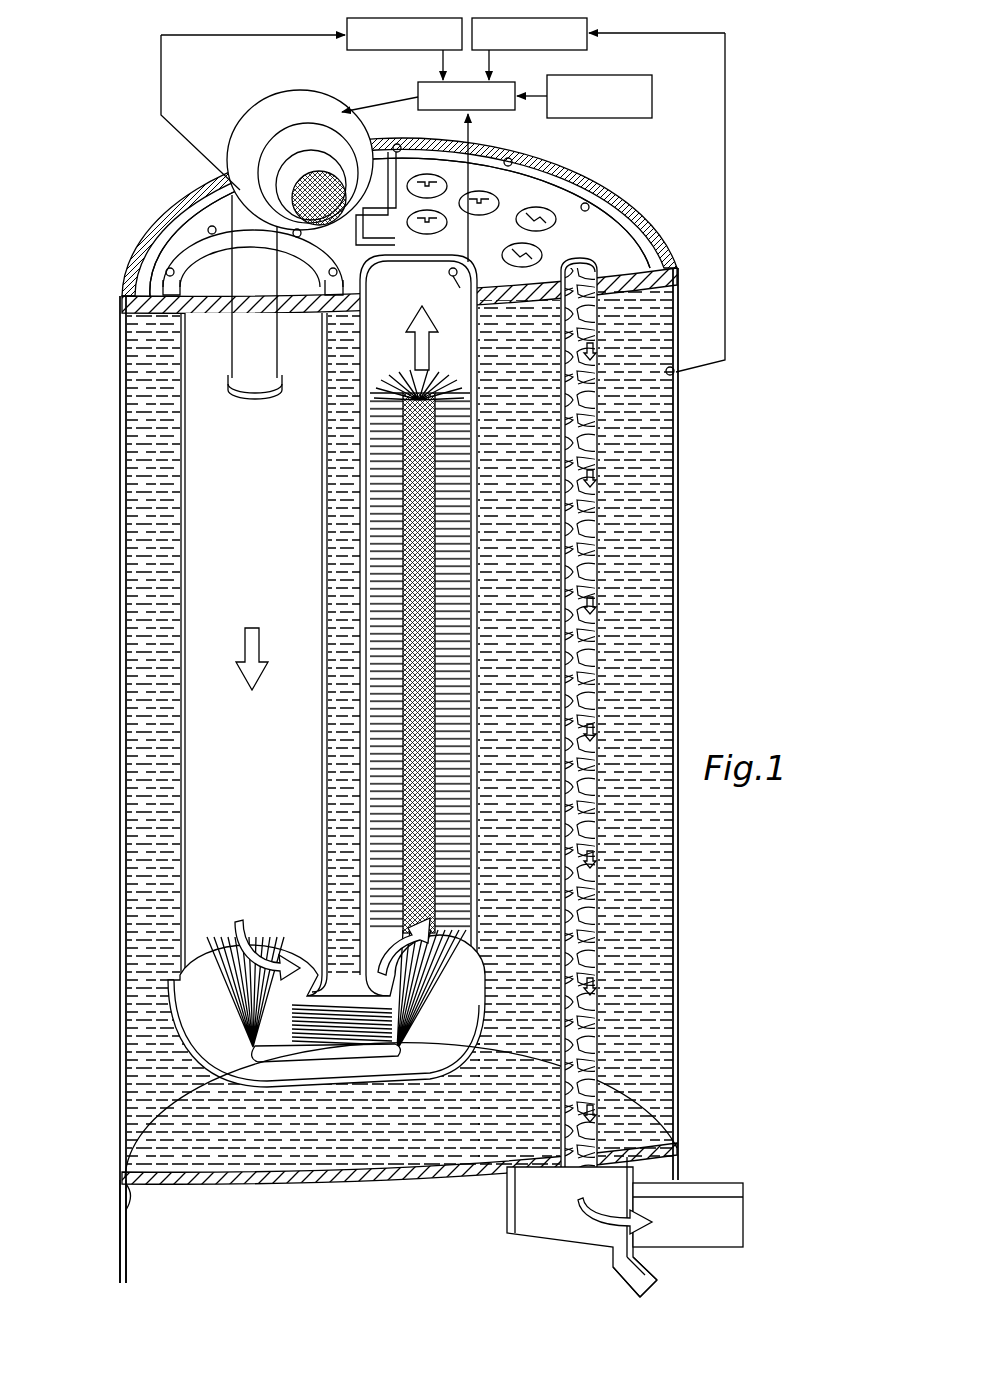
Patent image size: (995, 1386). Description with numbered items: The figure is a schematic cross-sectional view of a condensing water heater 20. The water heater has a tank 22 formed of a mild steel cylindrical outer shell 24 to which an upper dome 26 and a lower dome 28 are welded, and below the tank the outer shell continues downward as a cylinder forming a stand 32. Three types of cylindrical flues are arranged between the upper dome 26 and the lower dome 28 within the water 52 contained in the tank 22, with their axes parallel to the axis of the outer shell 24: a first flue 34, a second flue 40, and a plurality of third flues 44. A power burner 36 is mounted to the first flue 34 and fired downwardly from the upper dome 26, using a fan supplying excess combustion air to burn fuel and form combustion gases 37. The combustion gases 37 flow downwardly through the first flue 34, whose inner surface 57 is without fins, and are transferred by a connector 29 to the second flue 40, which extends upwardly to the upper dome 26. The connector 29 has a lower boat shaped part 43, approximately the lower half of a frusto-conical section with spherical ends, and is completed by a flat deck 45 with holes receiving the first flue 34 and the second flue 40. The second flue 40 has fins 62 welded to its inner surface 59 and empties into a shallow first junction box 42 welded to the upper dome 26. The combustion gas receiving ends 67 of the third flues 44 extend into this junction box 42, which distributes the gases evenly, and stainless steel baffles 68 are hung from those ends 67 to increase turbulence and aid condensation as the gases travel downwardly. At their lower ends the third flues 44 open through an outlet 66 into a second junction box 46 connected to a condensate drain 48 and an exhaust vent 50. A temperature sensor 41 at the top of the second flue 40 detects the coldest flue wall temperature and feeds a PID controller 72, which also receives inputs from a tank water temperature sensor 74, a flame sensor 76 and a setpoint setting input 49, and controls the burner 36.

The water heater 20 is at (105, 521).
The tank 22 is at (120, 823).
The outer shell 24 is at (678, 560).
The upper dome 26 is at (172, 210).
The lower dome 28 is at (120, 1193).
The connector 29 is at (170, 1035).
The stand 32 is at (118, 1243).
The first flue 34 is at (181, 487).
The power burner 36 is at (285, 118).
The combustion gases 37 is at (415, 343).
The second flue 40 is at (360, 492).
The temperature sensor 41 is at (456, 290).
The first junction box 42 is at (518, 200).
The boat shaped part 43 is at (462, 1058).
The third flues 44 is at (598, 625).
The deck 45 is at (355, 996).
The second junction box 46 is at (556, 1245).
The condensate drain 48 is at (658, 1280).
The setpoint setting input 49 is at (652, 94).
The exhaust vent 50 is at (710, 1183).
The water 52 is at (134, 1019).
The inner surface 57 is at (243, 529).
The inner surface 59 is at (385, 303).
The fins 62 is at (440, 378).
The duct outlet 66 is at (575, 1172).
The combustion gas receiving ends 67 is at (587, 247).
The baffles 68 is at (480, 192).
The controller 72 is at (418, 85).
The tank water temperature sensor 74 is at (676, 372).
The flame sensor 76 is at (347, 24).